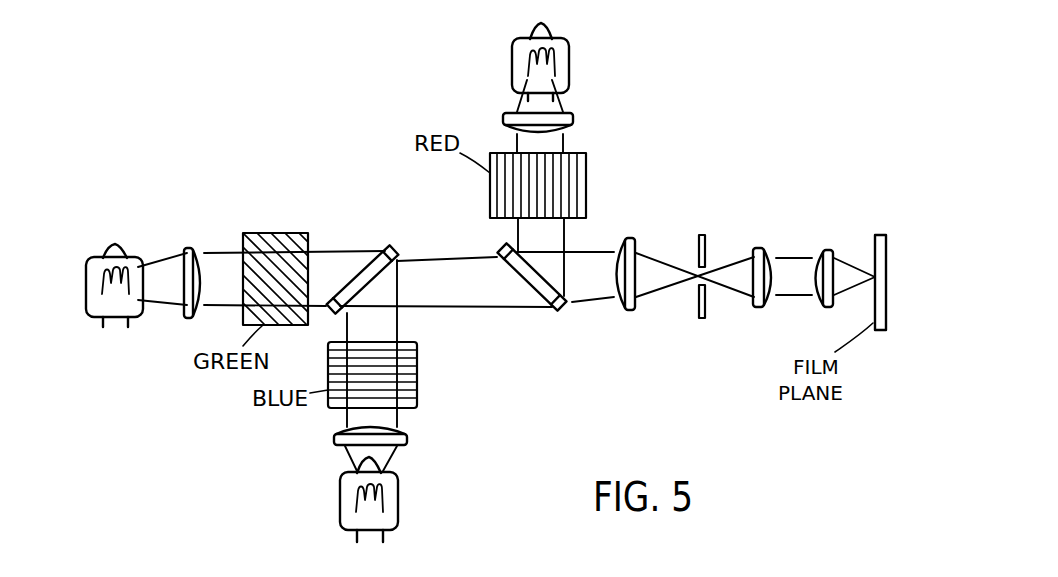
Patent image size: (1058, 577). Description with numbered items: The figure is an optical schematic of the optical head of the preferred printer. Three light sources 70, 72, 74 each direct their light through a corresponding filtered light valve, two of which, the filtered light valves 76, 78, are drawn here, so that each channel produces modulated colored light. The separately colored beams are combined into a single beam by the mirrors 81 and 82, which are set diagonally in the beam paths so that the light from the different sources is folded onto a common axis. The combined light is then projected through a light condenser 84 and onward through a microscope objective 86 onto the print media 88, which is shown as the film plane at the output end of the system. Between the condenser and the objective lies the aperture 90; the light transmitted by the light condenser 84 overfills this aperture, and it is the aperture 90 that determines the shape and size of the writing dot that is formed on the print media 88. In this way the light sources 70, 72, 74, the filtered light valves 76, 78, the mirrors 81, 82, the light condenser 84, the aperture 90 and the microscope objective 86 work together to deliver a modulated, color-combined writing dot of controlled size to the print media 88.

The light source 70 is at (571, 64).
The light source 72 is at (97, 256).
The light source 74 is at (340, 486).
The filtered light valve 76 is at (590, 165).
The filtered light valve 78 is at (262, 233).
The mirror 81 is at (384, 250).
The mirror 82 is at (568, 311).
The light condenser 84 is at (630, 240).
The microscope objective 86 is at (835, 225).
The print media 88 is at (880, 234).
The aperture 90 is at (703, 234).